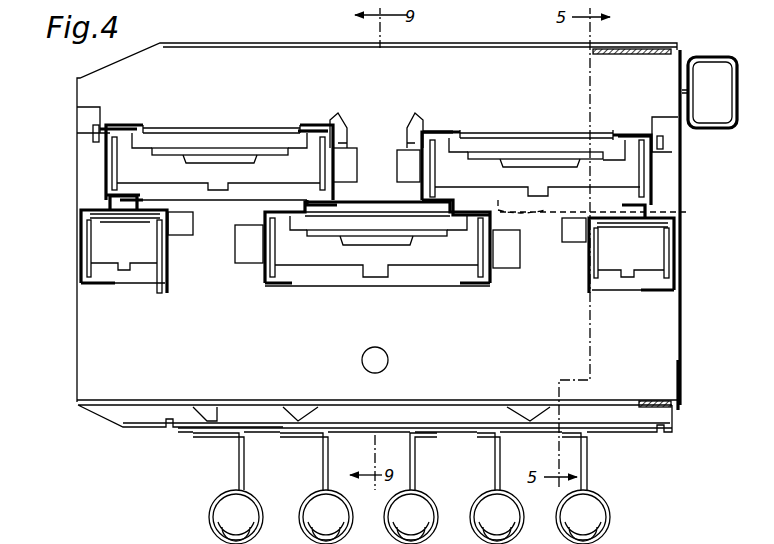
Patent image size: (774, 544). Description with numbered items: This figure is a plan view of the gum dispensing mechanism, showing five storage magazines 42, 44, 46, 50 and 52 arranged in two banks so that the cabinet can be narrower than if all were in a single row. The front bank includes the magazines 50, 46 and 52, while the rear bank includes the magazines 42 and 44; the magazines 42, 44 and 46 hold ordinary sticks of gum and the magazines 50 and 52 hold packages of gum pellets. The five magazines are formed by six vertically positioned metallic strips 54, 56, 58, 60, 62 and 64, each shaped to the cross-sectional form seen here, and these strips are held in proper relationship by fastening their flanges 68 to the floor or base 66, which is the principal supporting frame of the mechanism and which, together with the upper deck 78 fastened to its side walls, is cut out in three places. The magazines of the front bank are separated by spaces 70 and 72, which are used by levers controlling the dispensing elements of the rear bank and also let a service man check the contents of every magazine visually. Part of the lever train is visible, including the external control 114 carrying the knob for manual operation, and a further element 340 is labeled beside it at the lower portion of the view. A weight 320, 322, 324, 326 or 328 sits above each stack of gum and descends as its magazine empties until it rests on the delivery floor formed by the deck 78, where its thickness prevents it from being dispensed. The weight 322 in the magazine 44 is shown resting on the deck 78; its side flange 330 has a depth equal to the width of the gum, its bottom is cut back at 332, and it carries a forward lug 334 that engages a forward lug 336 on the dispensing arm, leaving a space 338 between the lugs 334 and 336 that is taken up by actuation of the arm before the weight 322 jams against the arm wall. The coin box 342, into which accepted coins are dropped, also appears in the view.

The magazine 42 is at (165, 133).
The magazine 44 is at (470, 135).
The magazine 46 is at (283, 280).
The magazine 50 is at (101, 275).
The magazine 52 is at (655, 292).
The metallic strip 54 is at (82, 212).
The metallic strip 56 is at (121, 128).
The metallic strip 58 is at (316, 128).
The metallic strip 60 is at (421, 126).
The metallic strip 62 is at (632, 131).
The metallic strip 64 is at (682, 236).
The base 66 is at (86, 355).
The flanges 68 is at (400, 168).
The space 70 is at (213, 290).
The space 72 is at (545, 277).
The upper deck 78 is at (496, 137).
The external control 114 is at (323, 462).
The weight 320 is at (215, 170).
The weight 322 is at (518, 175).
The weight 324 is at (100, 238).
The weight 326 is at (330, 252).
The weight 328 is at (650, 258).
The side flange 330 is at (187, 540).
The cut back 332 is at (570, 178).
The forward lug 334 is at (652, 177).
The forward lug 336 is at (613, 210).
The space 338 is at (545, 197).
The lead 340 is at (496, 462).
The coin box 342 is at (497, 277).